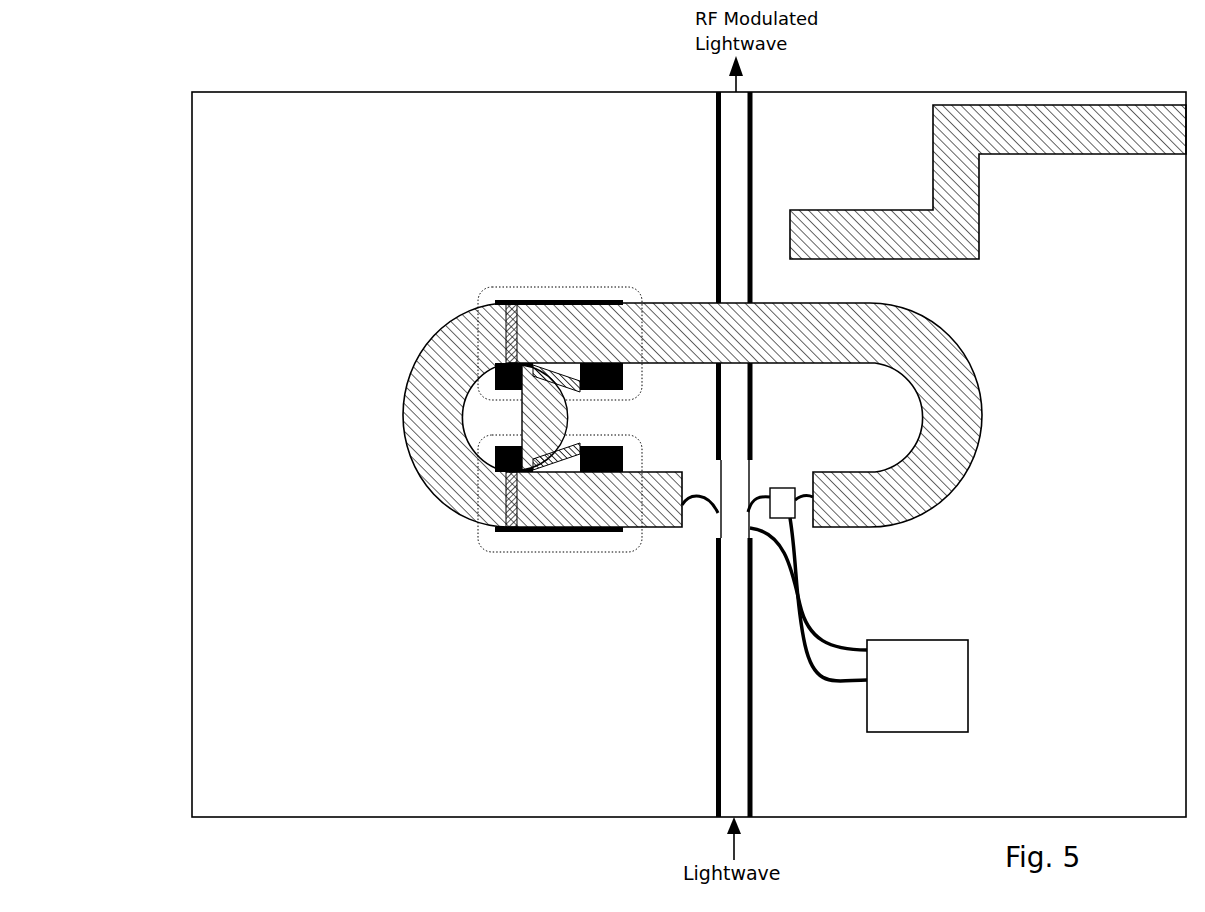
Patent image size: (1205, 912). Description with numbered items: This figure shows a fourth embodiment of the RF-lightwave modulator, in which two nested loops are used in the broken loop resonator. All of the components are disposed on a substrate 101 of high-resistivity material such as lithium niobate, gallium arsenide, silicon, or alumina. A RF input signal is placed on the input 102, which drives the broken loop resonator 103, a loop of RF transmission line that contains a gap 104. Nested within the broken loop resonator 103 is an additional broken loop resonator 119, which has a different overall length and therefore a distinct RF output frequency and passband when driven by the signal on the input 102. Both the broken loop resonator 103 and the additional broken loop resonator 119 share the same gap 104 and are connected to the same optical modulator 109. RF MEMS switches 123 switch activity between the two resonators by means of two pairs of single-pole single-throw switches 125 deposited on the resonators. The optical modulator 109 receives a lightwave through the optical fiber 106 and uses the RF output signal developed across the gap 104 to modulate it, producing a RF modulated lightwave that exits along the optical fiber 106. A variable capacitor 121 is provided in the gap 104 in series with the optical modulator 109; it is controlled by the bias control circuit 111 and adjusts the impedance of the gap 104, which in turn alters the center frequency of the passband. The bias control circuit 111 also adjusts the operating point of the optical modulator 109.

The substrate 101 is at (807, 92).
The input 102 is at (979, 215).
The broken loop resonator 103 is at (403, 403).
The gap 104 is at (760, 487).
The optical fiber 106 is at (716, 160).
The optical modulator 109 is at (718, 522).
The bias control circuit 111 is at (923, 640).
The additional broken loop resonator 119 is at (522, 413).
The variable capacitor 121 is at (780, 487).
The RF MEMS switches 123 is at (560, 302).
The single-pole single-throw switches 125 is at (490, 307).